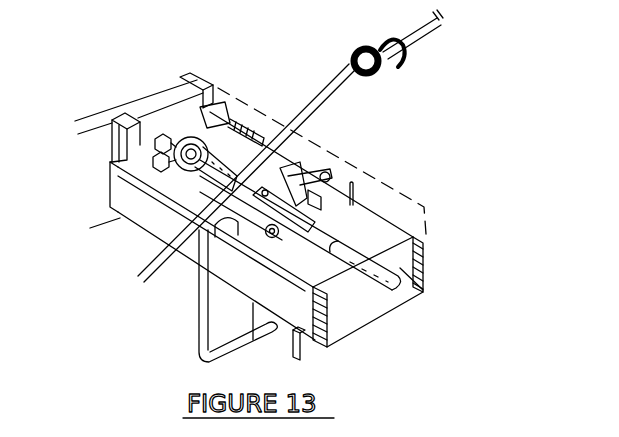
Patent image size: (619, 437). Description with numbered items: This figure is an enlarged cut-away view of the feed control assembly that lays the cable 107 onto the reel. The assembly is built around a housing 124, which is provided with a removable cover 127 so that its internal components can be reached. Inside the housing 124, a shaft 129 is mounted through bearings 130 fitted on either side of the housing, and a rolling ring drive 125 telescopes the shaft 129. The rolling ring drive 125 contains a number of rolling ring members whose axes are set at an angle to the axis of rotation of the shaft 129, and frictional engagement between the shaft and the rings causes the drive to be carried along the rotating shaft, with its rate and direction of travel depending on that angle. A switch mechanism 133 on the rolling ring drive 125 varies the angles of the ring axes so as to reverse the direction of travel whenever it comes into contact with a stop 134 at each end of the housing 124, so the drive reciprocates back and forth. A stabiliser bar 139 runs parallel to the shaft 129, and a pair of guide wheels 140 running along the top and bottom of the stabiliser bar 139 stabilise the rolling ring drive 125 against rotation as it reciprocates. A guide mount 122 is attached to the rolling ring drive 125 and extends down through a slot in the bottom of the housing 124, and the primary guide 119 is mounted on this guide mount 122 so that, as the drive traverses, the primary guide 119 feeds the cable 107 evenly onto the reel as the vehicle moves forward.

The cable 107 is at (430, 27).
The primary guide 119 is at (399, 72).
The guide mount 122 is at (303, 357).
The housing 124 is at (160, 226).
The rolling ring drive 125 is at (392, 182).
The removable cover 127 is at (420, 198).
The shaft 129 is at (428, 300).
The bearings 130 is at (186, 137).
The switch mechanism 133 is at (302, 163).
The stop 134 is at (258, 137).
The stabiliser bar 139 is at (372, 304).
The guide wheels 140 is at (266, 262).